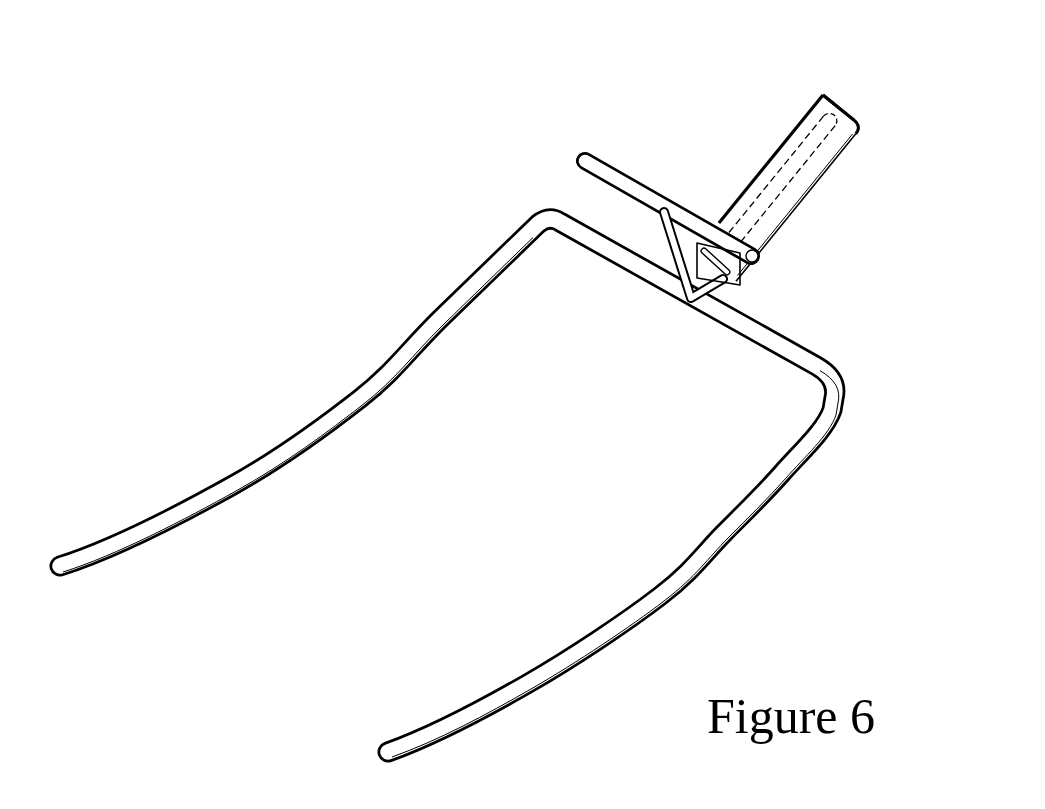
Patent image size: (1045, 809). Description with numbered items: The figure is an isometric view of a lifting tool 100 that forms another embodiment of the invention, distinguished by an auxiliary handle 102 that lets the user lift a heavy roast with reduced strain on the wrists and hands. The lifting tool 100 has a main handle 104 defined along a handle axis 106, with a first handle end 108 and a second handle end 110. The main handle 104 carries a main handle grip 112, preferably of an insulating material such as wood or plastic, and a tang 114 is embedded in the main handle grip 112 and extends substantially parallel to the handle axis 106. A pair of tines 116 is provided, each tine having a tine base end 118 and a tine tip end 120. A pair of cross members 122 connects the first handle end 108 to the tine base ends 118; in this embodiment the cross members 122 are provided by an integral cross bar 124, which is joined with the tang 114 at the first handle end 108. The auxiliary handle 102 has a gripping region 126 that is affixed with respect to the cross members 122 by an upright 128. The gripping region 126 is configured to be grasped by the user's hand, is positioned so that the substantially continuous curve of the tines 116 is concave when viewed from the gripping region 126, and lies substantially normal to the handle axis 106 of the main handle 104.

The lifting tool 100 is at (410, 222).
The auxiliary handle 102 is at (658, 182).
The main handle 104 is at (808, 201).
The handle axis 106 is at (852, 97).
The first handle end 108 is at (729, 287).
The second handle end 110 is at (820, 97).
The main handle grip 112 is at (788, 148).
The tang 114 is at (750, 208).
The tines 116 is at (680, 562).
The tine base end 118 is at (591, 361).
The tine tip end 120 is at (363, 581).
The cross members 122 is at (687, 308).
The cross bar 124 is at (790, 342).
The gripping region 126 is at (625, 184).
The upright 128 is at (682, 268).